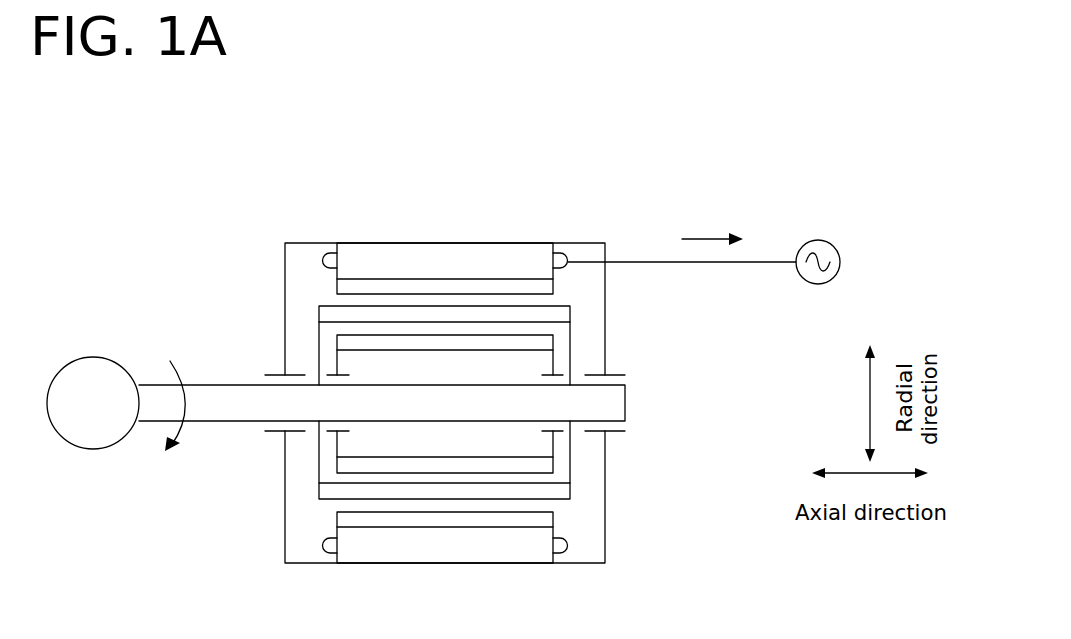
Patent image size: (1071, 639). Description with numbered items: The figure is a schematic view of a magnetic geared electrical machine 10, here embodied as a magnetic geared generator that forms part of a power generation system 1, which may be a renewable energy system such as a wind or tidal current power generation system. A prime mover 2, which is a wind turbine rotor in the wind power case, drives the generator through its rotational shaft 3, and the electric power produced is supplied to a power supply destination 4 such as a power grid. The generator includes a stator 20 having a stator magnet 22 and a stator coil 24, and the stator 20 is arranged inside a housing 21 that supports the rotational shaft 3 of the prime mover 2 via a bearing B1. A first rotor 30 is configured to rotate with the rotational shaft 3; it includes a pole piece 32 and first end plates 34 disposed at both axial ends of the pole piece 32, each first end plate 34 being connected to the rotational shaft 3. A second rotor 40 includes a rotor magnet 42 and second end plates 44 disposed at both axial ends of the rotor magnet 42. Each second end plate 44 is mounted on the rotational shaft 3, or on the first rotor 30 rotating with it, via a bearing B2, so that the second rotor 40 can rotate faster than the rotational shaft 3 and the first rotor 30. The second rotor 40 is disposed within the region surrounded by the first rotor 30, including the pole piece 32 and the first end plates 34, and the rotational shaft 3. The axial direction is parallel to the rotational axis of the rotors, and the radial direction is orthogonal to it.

The power generation system 1 is at (750, 103).
The prime mover 2 is at (93, 357).
The rotational shaft 3 is at (227, 386).
The power supply destination 4 is at (818, 240).
The magnetic geared electrical machine 10 is at (441, 191).
The stator 20 is at (505, 184).
The housing 21 is at (285, 266).
The stator magnet 22 is at (525, 285).
The stator coil 24 is at (561, 243).
The first rotor 30 is at (190, 520).
The pole piece 32 is at (317, 492).
The first end plates 34 is at (317, 470).
The second rotor 40 is at (703, 298).
The rotor magnet 42 is at (558, 341).
The second end plates 44 is at (555, 362).
The bearing B1 is at (280, 433).
The bearing B2 is at (558, 433).